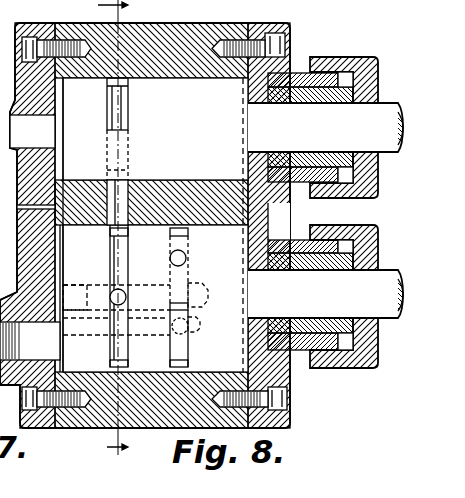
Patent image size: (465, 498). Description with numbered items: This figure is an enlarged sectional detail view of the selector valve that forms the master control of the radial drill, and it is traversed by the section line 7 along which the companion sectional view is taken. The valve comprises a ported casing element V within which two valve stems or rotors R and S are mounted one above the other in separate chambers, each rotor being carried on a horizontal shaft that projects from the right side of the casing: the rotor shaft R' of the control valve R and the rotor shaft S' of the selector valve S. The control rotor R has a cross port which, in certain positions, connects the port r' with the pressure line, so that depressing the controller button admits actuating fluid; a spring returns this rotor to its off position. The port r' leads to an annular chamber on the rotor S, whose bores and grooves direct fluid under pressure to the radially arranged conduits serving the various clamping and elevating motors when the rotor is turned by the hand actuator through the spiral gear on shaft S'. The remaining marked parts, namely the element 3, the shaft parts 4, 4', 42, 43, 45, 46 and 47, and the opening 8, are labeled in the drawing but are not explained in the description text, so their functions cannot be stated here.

The ported casing element V is at (303, 35).
The control valve rotor R is at (144, 129).
The rotor shaft of the control valve R' is at (325, 127).
The selector valve rotor S is at (143, 294).
The rotor shaft of the selector valve S' is at (325, 294).
The port r' is at (142, 188).
The housing flange boss 3 is at (6, 283).
The secondary shaft 4 is at (160, 338).
The main vertical shaft lower portion 4' is at (102, 296).
The ball on secondary shaft 42 is at (167, 286).
The collar of secondary shaft 43 is at (170, 240).
The lower ball of secondary shaft 45 is at (196, 357).
The nut on secondary shaft 46 is at (204, 313).
The gear on main shaft 47 is at (78, 361).
The threaded bolt hole 8 is at (62, 340).
The section line 7- 7 is at (105, 229).